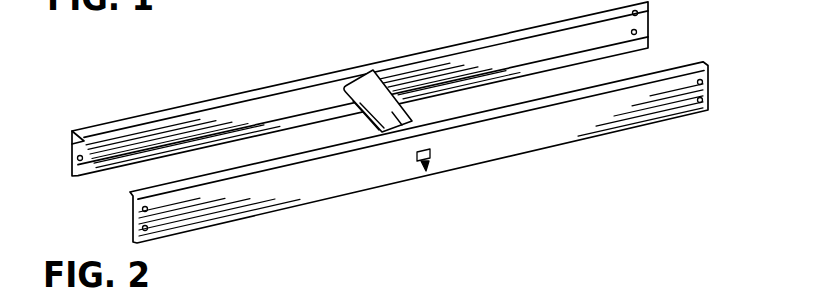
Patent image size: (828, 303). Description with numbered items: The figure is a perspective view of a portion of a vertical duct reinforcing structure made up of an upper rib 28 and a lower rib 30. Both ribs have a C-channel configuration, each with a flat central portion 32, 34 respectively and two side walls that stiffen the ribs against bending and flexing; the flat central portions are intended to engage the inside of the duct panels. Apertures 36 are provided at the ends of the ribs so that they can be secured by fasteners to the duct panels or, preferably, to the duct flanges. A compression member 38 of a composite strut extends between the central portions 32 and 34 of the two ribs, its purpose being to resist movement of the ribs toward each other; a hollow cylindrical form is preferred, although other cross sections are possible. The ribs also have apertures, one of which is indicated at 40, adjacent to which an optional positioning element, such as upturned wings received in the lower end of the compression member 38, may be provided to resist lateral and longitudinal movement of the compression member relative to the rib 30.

The upper rib 28 is at (390, 131).
The lower rib 30 is at (419, 131).
The flat central portion 32 is at (202, 123).
The flat central portion 34 is at (323, 185).
The apertures 36 is at (148, 210).
The compression member 38 is at (355, 83).
The aperture 40 is at (427, 164).